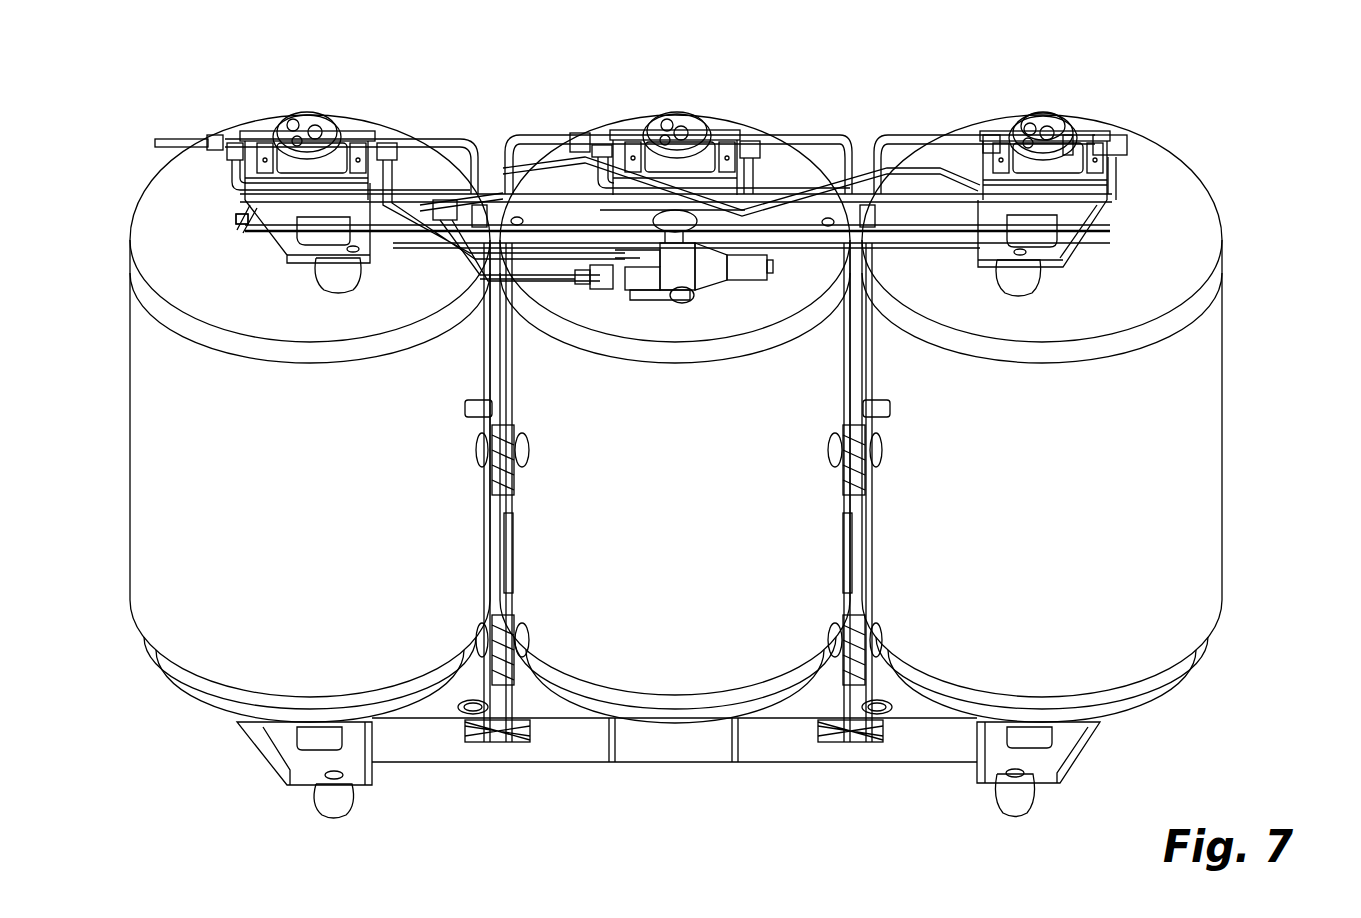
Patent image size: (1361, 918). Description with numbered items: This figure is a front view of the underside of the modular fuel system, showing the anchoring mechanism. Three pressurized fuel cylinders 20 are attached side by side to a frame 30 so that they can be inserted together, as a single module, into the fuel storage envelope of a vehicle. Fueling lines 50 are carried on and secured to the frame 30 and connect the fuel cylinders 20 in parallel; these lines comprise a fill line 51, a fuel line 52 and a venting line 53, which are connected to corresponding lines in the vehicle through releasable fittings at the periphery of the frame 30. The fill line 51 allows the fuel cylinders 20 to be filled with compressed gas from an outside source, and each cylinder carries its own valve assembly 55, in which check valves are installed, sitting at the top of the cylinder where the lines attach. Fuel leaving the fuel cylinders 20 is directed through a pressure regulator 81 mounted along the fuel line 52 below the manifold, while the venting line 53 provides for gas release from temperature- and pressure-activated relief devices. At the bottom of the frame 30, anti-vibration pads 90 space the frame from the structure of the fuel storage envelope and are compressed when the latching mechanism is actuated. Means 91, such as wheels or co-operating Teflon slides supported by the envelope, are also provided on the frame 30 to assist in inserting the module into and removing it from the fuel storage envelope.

The pressurized fuel cylinder 20 is at (322, 573).
The frame 30 is at (1073, 216).
The fueling lines 50 is at (245, 213).
The fill line 51 is at (163, 152).
The fuel line 52 is at (563, 247).
The venting line 53 is at (533, 255).
The valve assembly 55 is at (1040, 127).
The pressure regulator 81 is at (670, 262).
The anti-vibration pad 90 is at (345, 801).
The means to assist removing and inserting the module 91 is at (532, 451).